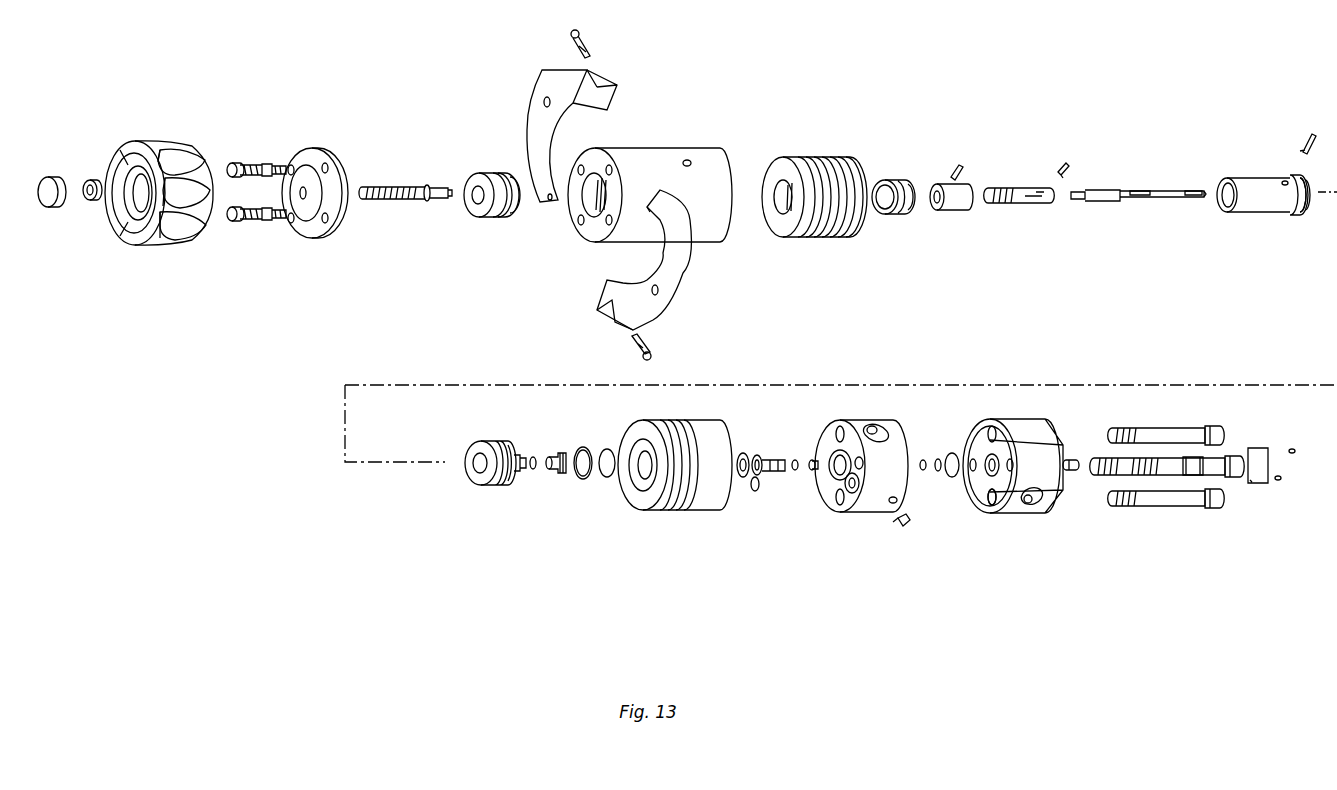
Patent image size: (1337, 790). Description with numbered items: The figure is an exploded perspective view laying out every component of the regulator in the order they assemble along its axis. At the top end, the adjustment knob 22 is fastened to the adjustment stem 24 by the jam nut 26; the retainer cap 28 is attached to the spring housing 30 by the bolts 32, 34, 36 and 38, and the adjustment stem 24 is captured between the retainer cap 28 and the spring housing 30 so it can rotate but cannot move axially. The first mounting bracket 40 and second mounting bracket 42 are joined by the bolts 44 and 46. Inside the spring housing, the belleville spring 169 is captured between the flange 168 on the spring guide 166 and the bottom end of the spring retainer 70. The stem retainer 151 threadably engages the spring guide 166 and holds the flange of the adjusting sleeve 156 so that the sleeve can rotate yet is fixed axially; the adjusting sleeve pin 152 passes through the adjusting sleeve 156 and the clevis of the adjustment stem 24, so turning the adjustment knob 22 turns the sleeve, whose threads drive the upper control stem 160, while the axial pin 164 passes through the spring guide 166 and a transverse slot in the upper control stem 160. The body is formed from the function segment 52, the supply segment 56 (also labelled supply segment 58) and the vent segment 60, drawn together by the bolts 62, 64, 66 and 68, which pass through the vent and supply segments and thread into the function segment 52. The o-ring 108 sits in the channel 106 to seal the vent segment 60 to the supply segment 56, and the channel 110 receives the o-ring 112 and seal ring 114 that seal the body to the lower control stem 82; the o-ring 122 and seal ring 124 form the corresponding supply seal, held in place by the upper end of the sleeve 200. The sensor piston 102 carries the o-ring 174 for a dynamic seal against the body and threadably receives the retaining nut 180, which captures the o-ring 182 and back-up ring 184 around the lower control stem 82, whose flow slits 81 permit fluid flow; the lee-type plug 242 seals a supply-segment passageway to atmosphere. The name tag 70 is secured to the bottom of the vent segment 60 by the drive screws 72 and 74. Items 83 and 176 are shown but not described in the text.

The adjustment knob 22 is at (155, 145).
The adjustment stem 24 is at (385, 185).
The jam nut 26 is at (92, 180).
The retainer cap 28 is at (313, 148).
The spring housing 30 is at (660, 148).
The bolt 32 is at (268, 225).
The bolt 34 is at (266, 162).
The bolt 36 is at (236, 225).
The bolt 38 is at (235, 162).
The first mounting bracket 40 is at (700, 275).
The second mounting bracket 42 is at (545, 93).
The bolt 44 is at (630, 348).
The bolt 46 is at (570, 34).
The function segment 52 is at (675, 418).
The supply segment 56 is at (836, 420).
The supply segment 58 is at (877, 430).
The vent segment 60 is at (1040, 422).
The bolt 62 is at (1036, 503).
The bolt 64 is at (1165, 430).
The bolt 66 is at (1222, 498).
The bolt 68 is at (1110, 478).
The name tag 70 is at (490, 218).
The drive screw 72 is at (1296, 451).
The drive screw 74 is at (1281, 478).
The flow slits 81 is at (1138, 200).
The lower control stem 82 is at (1160, 178).
The rod section 83 is at (1198, 200).
The sensor piston 102 is at (487, 450).
The channel 106 is at (987, 503).
The o-ring 108 is at (951, 453).
The channel 110 is at (991, 452).
The o-ring 112 is at (1075, 456).
The seal ring 114 is at (922, 460).
The o-ring 122 is at (795, 459).
The seal ring 124 is at (810, 470).
The stem retainer 151 is at (886, 180).
The adjusting sleeve pin 152 is at (952, 168).
The adjusting sleeve 156 is at (960, 210).
The upper control stem 160 is at (1012, 186).
The axial pin 164 is at (1062, 168).
The spring guide 166 is at (1250, 177).
The flange 168 is at (1304, 205).
The belleville spring 169 is at (805, 157).
The o-ring 174 is at (607, 478).
The O-ring 176 is at (581, 447).
The retaining nut 180 is at (559, 475).
The o-ring 182 is at (532, 456).
The back-up ring 184 is at (518, 478).
The sleeve 200 is at (763, 452).
The lee-type plug 242 is at (891, 534).